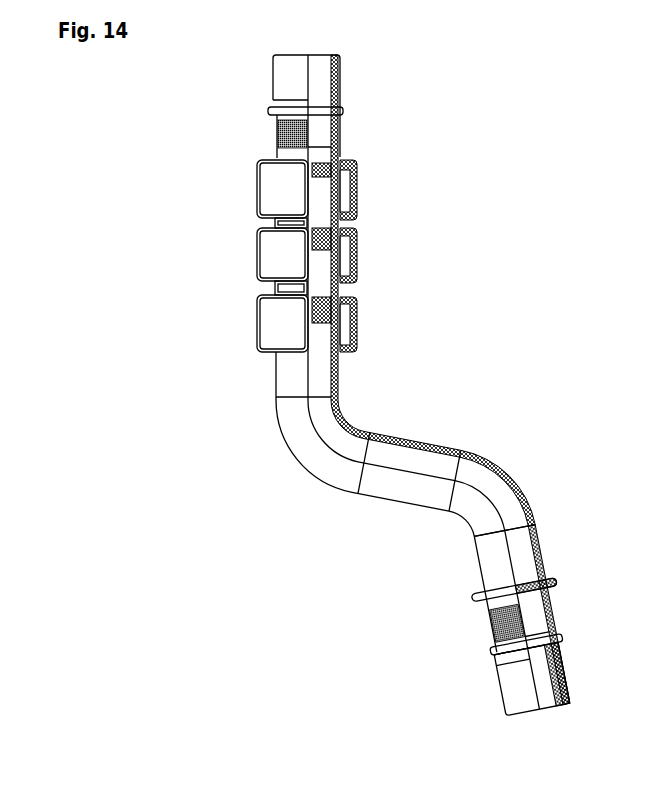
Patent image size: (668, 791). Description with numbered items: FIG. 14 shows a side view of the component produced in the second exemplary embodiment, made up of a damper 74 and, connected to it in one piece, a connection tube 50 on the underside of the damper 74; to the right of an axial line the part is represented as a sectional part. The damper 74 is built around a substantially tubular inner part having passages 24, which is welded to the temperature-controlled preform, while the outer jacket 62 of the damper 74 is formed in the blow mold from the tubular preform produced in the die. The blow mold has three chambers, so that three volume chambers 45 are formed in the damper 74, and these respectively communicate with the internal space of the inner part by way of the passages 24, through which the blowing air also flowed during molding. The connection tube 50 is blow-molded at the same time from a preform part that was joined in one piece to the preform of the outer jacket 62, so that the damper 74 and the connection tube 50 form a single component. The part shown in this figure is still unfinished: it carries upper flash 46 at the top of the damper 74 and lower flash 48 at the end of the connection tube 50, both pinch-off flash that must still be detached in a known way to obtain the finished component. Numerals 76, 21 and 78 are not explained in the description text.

The upper flash 46 is at (345, 83).
The first sealing bead 76 is at (260, 108).
The passages 24 is at (330, 172).
The damper 74 is at (237, 256).
The outer jacket 62 is at (358, 257).
The lower clamp 21 is at (313, 338).
The volume chambers 45 is at (343, 318).
The connection tube 50 is at (350, 525).
The second sealing bead 78 is at (572, 637).
The lower flash 48 is at (570, 658).